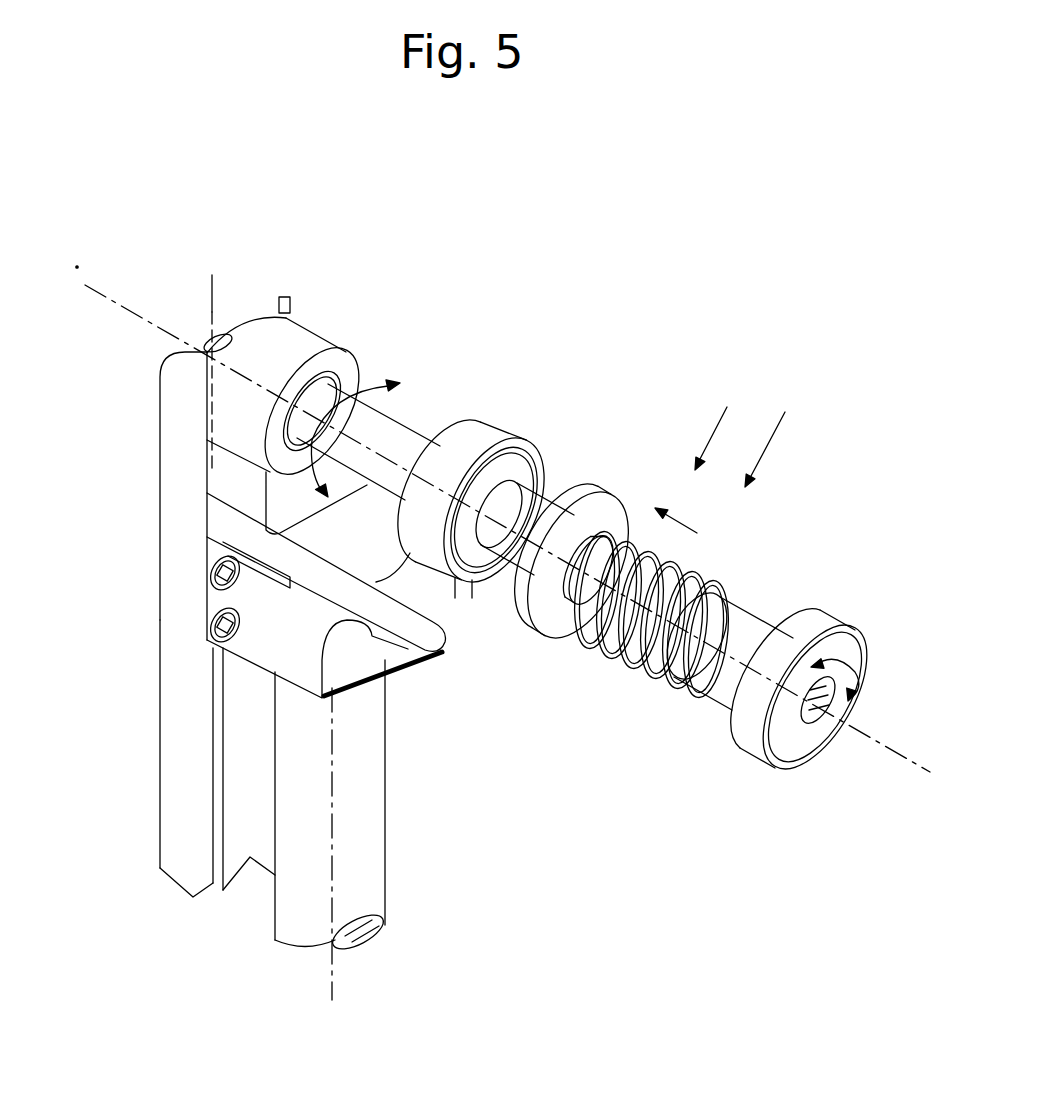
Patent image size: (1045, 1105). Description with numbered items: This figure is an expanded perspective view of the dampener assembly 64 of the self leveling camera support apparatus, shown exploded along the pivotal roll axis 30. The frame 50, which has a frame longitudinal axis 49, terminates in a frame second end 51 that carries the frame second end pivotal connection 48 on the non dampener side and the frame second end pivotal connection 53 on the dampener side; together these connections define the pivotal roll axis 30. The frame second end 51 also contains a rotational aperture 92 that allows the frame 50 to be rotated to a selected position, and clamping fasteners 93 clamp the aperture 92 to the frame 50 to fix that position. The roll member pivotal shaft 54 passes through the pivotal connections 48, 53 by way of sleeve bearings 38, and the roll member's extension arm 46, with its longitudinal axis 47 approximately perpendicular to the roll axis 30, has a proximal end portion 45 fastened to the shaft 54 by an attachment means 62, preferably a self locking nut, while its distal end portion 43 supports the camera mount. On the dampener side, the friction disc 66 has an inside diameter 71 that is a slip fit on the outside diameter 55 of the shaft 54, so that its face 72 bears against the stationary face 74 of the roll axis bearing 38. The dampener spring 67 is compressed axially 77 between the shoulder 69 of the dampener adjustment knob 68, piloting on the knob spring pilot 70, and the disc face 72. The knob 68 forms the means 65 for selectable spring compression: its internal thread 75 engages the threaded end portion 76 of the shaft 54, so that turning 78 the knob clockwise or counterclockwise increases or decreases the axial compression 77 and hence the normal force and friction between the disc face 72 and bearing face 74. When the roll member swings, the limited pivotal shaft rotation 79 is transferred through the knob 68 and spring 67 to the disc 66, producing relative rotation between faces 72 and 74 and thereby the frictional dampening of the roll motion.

The pivotal roll axis 30 is at (873, 737).
The pivotal roll axis bearings 38 is at (323, 347).
The extension arm distal end portion 43 is at (180, 868).
The extension arm proximal end portion 45 is at (160, 410).
The extension arm 46 is at (158, 653).
The extension arm longitudinal axis 47 is at (210, 303).
The frame second end pivotal connection on the non dampener side 48 is at (268, 350).
The frame longitudinal axis 49 is at (334, 987).
The frame 50 is at (340, 838).
The frame second end 51 is at (270, 675).
The frame second end pivotal connection on dampener side 53 is at (462, 438).
The roll member pivotal shaft 54 is at (401, 432).
The roll member pivotal shaft outside diameter 55 is at (540, 455).
The attachment means between extension arm proximal end portion and pivotal shaft 62 is at (223, 333).
The dampener assembly 64 is at (728, 413).
The means for selectable spring compression 65 is at (780, 432).
The dampener friction disc 66 is at (524, 612).
The dampener spring 67 is at (645, 670).
The dampener adjustment knob 68 is at (828, 620).
The dampener adjustment knob shoulder 69 is at (790, 612).
The dampener adjustment knob spring pilot 70 is at (705, 693).
The dampener friction disc inside diameter 71 is at (603, 533).
The dampener friction disc face 72 is at (581, 452).
The roll axis bearing stationary face 74 is at (506, 445).
The dampener adjustment knob spring pilot internal thread 75 is at (812, 723).
The pivotal shaft threaded end portion 76 is at (586, 530).
The spring axial compression 77 is at (700, 538).
The knob turning rotation 78 is at (842, 660).
The pivotal shaft rotation 79 is at (371, 432).
The frame second end rotational aperture 92 is at (375, 667).
The frame second end rotational aperture clamping fasteners 93 is at (210, 600).